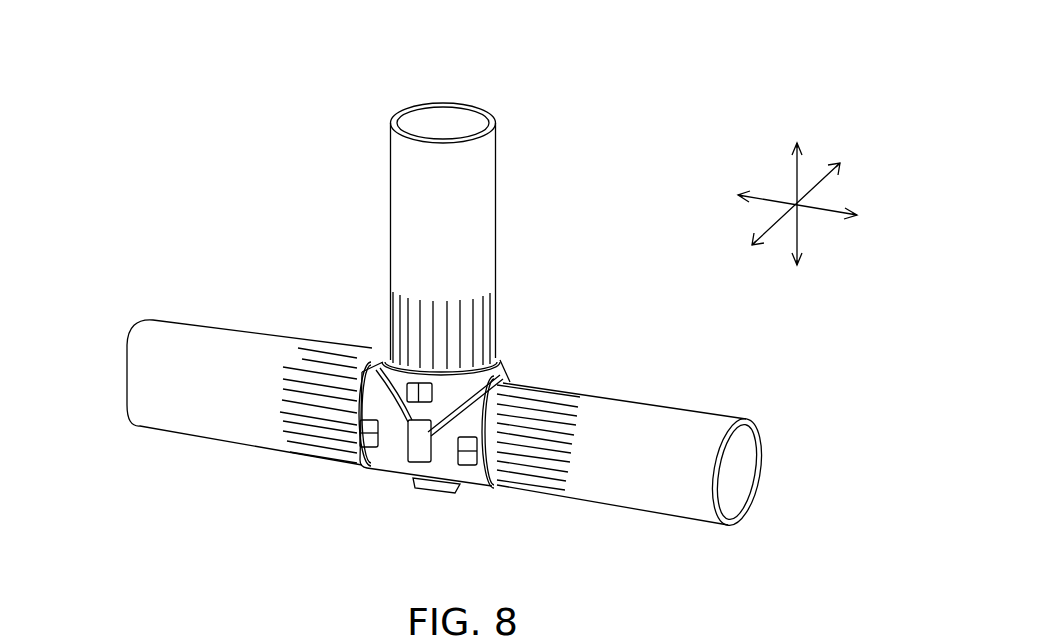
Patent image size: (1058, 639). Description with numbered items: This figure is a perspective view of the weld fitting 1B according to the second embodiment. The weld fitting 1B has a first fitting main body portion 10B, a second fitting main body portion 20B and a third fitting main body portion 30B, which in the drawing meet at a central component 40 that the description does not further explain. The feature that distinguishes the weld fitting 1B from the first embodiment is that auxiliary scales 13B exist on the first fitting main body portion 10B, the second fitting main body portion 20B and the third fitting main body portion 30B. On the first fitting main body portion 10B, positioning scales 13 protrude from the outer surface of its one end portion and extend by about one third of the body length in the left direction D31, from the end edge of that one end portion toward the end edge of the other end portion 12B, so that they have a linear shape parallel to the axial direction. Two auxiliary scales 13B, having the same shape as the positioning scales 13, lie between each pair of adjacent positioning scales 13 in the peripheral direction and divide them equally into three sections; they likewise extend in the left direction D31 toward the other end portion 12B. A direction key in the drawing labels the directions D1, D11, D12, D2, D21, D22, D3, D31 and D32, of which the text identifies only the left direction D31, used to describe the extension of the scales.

The weld fitting 1B is at (582, 78).
The first fitting main body portion 10B is at (178, 312).
The other end portion 12B is at (127, 368).
The positioning scales 13 is at (330, 385).
The auxiliary scales 13B is at (295, 359).
The second fitting main body portion 20B is at (656, 392).
The third fitting main body portion 30B is at (485, 102).
The connector 40 is at (386, 490).
The first direction D1 is at (822, 180).
The first direction one side D11 is at (732, 254).
The first direction other side D12 is at (861, 156).
The second direction D2 is at (796, 186).
The second direction one side D21 is at (793, 134).
The second direction other side D22 is at (795, 276).
The third direction D3 is at (822, 210).
The left direction D31 is at (716, 191).
The third direction other side D32 is at (877, 218).